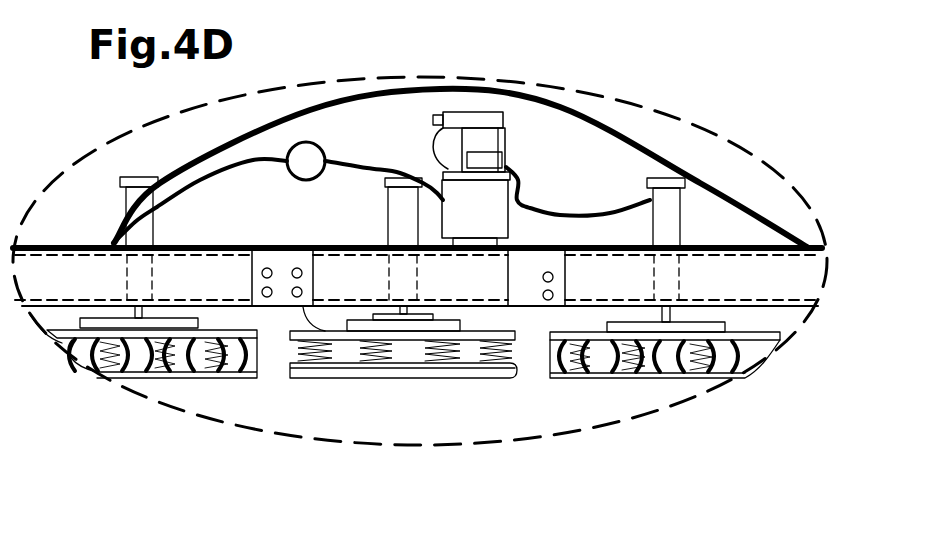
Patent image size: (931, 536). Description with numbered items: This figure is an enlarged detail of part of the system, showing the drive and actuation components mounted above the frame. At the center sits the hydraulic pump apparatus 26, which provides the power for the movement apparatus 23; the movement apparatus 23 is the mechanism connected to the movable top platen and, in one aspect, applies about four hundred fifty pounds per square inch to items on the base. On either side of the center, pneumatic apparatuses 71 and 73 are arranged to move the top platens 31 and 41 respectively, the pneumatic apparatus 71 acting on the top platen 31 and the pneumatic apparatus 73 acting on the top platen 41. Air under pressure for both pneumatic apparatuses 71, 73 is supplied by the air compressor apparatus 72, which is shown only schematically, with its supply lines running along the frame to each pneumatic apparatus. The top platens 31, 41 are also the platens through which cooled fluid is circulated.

The movement apparatus 23 is at (397, 203).
The hydraulic pump apparatus 26 is at (480, 140).
The top platen 31 is at (212, 332).
The top platen 41 is at (737, 327).
The pneumatic apparatus 71 is at (137, 200).
The air compressor apparatus 72 is at (324, 158).
The pneumatic apparatus 73 is at (645, 197).